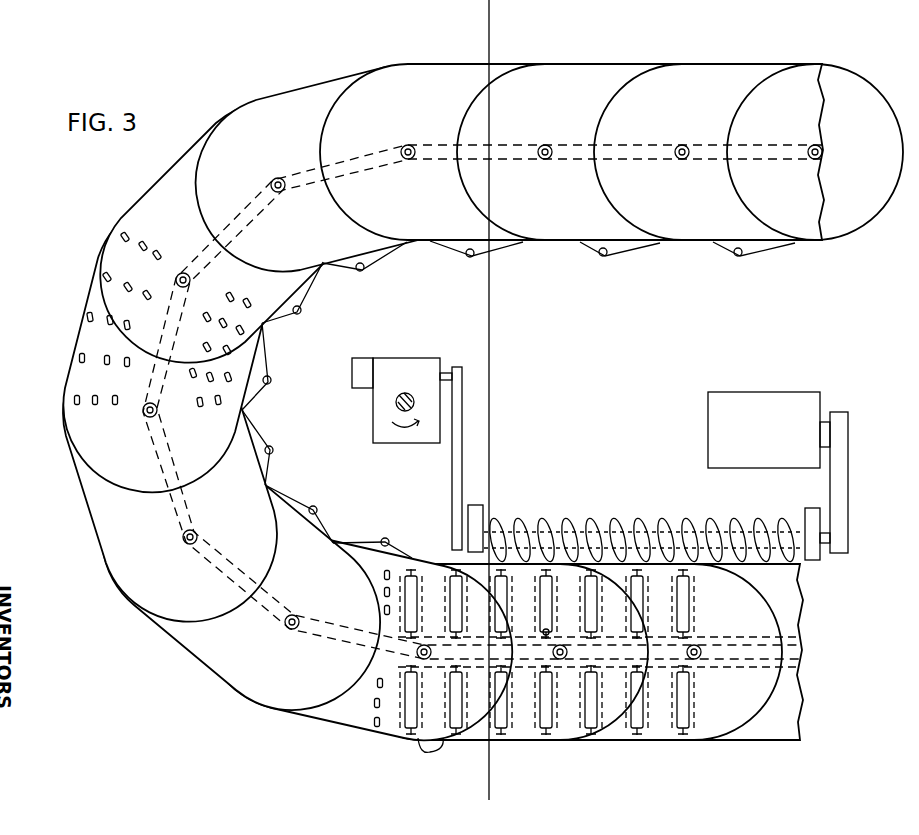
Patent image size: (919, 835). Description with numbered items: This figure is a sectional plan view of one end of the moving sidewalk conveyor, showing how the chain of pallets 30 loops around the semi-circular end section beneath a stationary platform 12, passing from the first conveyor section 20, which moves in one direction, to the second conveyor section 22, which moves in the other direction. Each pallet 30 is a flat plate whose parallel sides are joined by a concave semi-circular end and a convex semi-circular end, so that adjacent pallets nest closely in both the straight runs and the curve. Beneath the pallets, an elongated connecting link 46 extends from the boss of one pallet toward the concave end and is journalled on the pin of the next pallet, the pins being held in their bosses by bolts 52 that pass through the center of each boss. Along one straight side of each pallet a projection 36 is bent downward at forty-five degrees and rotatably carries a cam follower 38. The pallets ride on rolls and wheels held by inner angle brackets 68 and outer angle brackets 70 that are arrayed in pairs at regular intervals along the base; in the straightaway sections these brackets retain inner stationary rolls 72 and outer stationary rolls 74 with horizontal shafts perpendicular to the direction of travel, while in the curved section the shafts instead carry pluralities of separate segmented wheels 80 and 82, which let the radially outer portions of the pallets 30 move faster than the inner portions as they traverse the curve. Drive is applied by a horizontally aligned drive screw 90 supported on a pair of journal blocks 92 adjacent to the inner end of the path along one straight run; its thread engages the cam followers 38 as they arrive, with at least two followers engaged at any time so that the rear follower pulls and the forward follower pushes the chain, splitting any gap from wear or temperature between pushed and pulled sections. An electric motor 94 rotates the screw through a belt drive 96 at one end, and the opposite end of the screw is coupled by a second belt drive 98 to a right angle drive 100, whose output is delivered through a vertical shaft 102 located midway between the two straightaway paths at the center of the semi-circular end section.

The stationary platform 12 is at (489, 37).
The first conveyor section 20 is at (806, 650).
The second conveyor section 22 is at (780, 252).
The pallet 30 is at (414, 151).
The projection 36 is at (737, 256).
The cam follower 38 is at (603, 256).
The connecting link 46 is at (480, 147).
The bolt 52 is at (548, 147).
The inner angle bracket 68 is at (540, 630).
The outer angle bracket 70 is at (448, 672).
The inner stationary roll 72 is at (552, 628).
The outer stationary roll 74 is at (472, 755).
The segmented wheels 80 is at (247, 400).
The segmented wheels 82 is at (116, 408).
The drive screw 90 is at (700, 516).
The journal block 92 is at (476, 518).
The electric motor 94 is at (738, 410).
The belt drive 96 is at (840, 448).
The second belt drive 98 is at (458, 443).
The right angle drive 100 is at (402, 384).
The vertical shaft 102 is at (431, 368).